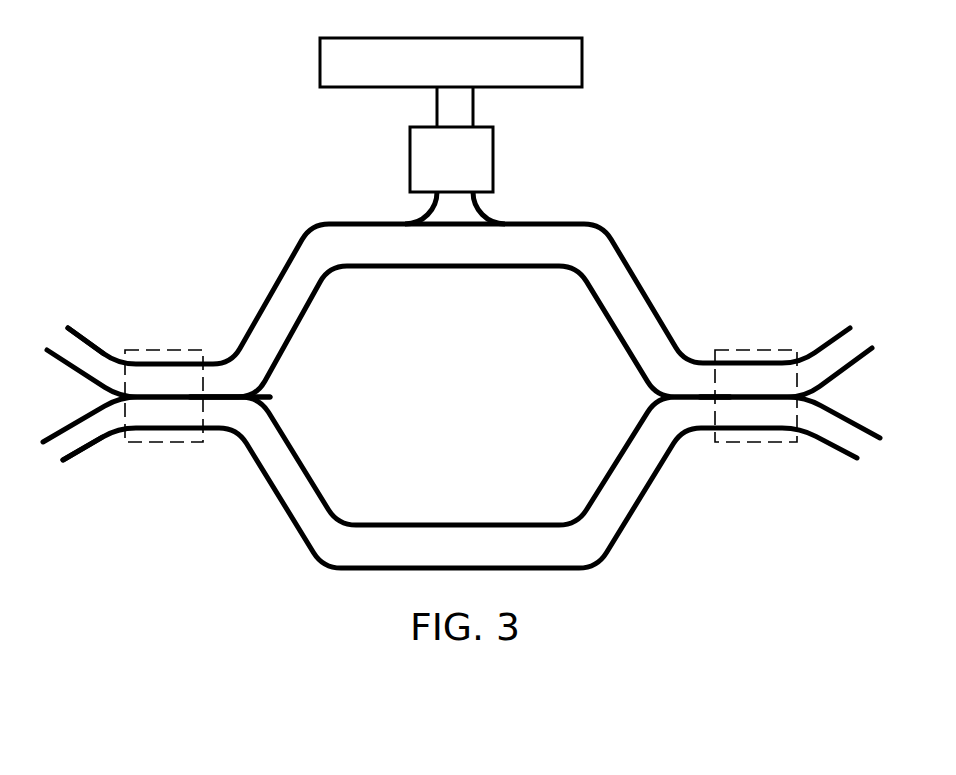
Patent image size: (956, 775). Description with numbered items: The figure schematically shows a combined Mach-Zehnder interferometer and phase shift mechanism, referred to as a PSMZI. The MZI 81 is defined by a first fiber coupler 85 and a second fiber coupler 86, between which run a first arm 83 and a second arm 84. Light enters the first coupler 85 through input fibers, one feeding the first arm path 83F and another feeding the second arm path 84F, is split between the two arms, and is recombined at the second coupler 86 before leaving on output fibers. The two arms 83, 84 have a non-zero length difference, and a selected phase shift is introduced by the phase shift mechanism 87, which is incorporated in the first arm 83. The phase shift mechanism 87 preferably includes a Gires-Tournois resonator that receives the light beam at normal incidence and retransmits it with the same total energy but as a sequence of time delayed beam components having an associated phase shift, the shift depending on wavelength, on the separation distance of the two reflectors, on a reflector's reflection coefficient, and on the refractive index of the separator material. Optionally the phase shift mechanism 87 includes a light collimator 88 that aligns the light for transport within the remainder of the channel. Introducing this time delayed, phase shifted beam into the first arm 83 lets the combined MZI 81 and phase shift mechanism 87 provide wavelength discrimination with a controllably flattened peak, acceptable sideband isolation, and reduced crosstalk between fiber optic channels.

The MZI 81 is at (628, 134).
The first arm 83 is at (308, 263).
The first input waveguide 83F is at (80, 345).
The second arm 84 is at (322, 528).
The second input waveguide 84F is at (70, 440).
The first fiber coupler 85 is at (168, 431).
The second fiber coupler 86 is at (759, 442).
The phase shift mechanism 87 is at (550, 59).
The light collimator 88 is at (478, 164).